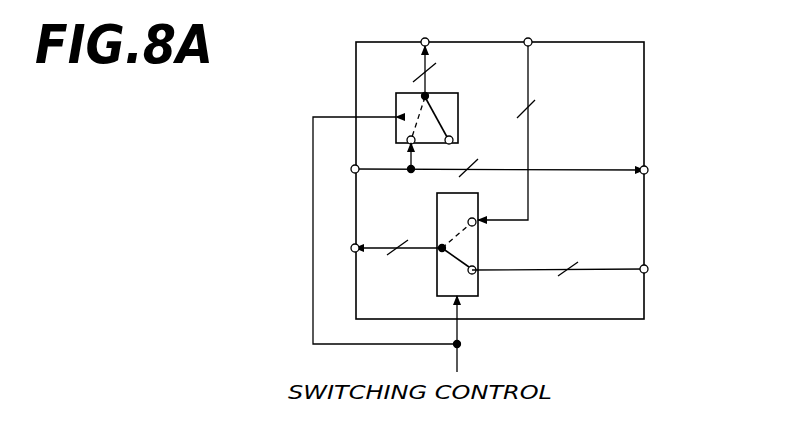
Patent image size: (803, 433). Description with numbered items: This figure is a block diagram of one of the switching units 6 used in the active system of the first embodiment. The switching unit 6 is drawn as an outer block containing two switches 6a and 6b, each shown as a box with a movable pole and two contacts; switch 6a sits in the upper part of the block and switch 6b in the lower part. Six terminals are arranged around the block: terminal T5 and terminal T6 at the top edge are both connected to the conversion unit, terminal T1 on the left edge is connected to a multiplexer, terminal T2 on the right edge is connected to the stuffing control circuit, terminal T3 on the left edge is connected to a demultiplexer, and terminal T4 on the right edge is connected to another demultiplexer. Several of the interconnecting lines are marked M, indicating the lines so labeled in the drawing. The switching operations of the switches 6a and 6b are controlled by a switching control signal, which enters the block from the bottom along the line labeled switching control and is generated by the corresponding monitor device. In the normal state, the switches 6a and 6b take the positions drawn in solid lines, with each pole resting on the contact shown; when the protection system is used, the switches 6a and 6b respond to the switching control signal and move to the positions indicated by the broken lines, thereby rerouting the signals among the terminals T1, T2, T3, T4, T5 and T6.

The switching unit 6 is at (644, 118).
The switch 6a is at (458, 113).
The switch 6b is at (437, 228).
The terminal T1 is at (482, 161).
The terminal T2 is at (662, 171).
The terminal T3 is at (380, 247).
The terminal T4 is at (578, 270).
The terminal T5 is at (426, 52).
The terminal T6 is at (509, 115).
The multi-conductor line marker M is at (484, 172).